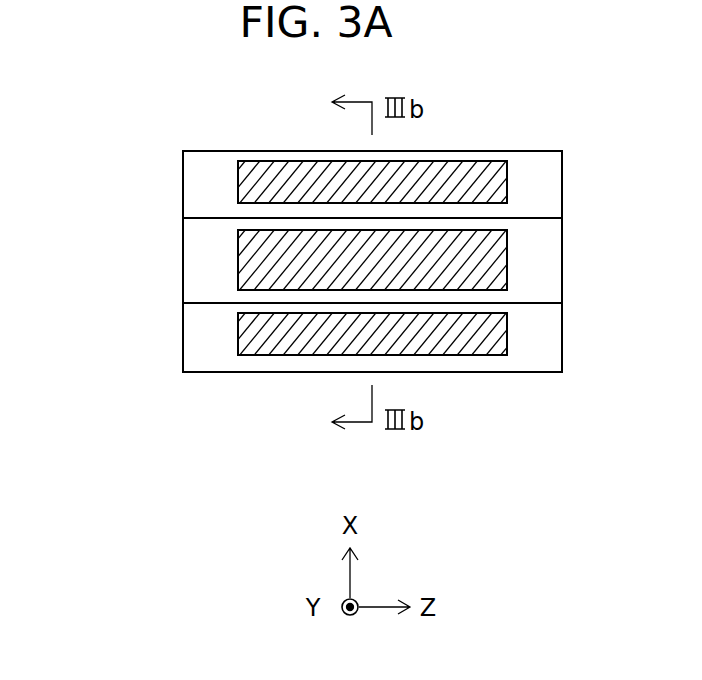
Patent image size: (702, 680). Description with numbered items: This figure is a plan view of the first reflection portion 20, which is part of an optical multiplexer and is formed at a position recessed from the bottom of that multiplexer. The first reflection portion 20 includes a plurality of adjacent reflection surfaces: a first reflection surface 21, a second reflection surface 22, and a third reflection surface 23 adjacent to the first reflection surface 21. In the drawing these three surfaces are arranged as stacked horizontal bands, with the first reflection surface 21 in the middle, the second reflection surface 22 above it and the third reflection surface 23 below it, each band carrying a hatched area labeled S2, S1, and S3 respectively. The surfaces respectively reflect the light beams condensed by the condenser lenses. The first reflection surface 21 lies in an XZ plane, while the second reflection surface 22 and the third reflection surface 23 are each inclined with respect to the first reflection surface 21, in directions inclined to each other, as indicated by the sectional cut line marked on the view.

The first reflection portion 20 is at (92, 165).
The first reflection surface 21 is at (200, 262).
The second reflection surface 22 is at (200, 195).
The third reflection surface 23 is at (200, 337).
The first light emitting surface S1 is at (505, 263).
The second light emitting surface S2 is at (505, 183).
The third light emitting surface S3 is at (505, 338).